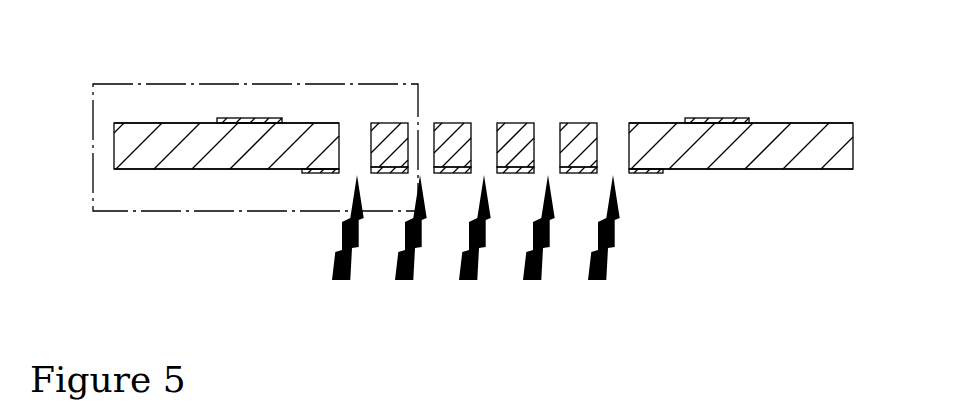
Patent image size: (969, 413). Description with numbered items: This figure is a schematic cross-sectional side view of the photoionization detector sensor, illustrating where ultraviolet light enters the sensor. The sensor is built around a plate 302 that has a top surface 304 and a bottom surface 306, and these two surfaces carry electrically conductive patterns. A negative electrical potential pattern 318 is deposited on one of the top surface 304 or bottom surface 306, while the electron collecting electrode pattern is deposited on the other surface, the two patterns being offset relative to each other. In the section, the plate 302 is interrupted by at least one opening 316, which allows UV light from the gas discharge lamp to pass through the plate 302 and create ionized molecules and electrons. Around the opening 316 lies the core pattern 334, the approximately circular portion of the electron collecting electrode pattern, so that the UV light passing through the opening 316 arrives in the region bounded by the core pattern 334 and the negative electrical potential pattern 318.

The plate 302 is at (140, 146).
The top surface 304 is at (177, 123).
The bottom surface 306 is at (173, 170).
The opening 316 is at (483, 109).
The negative electrical potential pattern 318 is at (250, 118).
The core pattern 334 is at (323, 173).
The ultraviolet light UV is at (332, 275).